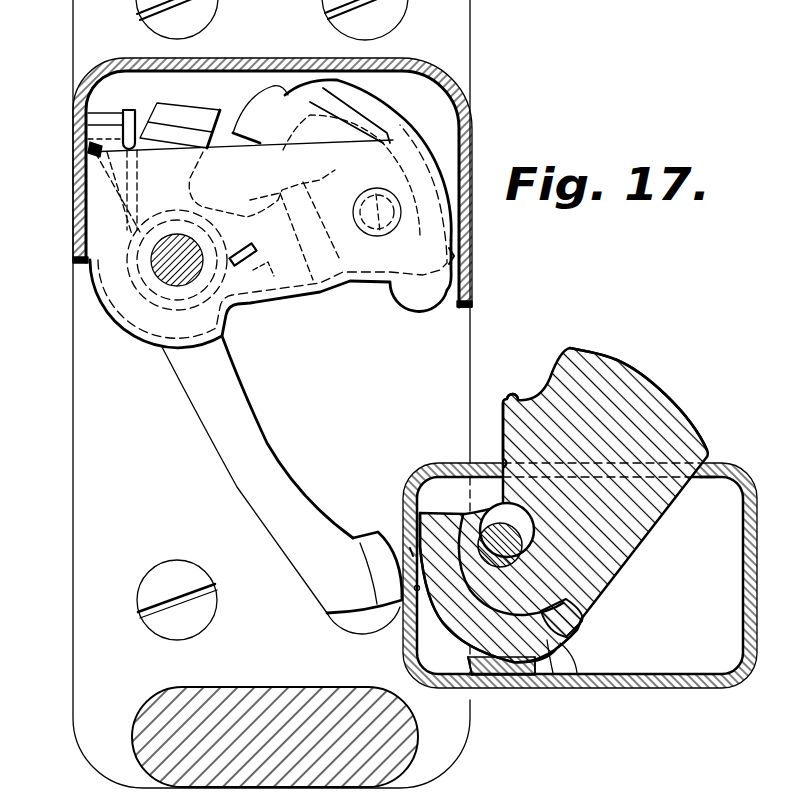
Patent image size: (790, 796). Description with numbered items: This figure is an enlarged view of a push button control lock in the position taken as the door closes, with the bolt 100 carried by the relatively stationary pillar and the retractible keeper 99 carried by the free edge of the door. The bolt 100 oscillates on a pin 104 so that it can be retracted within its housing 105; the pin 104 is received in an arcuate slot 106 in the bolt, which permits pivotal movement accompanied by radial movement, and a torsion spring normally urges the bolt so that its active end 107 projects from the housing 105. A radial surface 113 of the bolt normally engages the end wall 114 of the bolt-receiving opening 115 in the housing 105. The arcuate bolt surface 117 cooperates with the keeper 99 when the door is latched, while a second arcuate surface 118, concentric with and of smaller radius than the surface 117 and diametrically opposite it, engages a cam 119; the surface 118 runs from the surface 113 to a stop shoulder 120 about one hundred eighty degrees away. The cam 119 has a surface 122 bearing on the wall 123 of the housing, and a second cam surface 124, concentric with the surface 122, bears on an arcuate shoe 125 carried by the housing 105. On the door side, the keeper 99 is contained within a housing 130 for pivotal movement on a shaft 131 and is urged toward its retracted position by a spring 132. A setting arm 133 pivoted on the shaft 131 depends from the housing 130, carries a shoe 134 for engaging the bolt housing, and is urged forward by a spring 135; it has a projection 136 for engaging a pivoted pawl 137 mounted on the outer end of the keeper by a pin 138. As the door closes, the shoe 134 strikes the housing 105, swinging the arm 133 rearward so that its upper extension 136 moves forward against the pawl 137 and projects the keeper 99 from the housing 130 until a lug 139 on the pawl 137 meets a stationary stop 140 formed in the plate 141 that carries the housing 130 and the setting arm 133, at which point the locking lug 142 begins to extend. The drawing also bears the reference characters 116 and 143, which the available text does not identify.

The keeper 99 is at (458, 257).
The bolt 100 is at (675, 403).
The pin 104 is at (525, 560).
The housing 105 is at (416, 466).
The arcuate slot 106 is at (530, 536).
The active end 107 is at (625, 392).
The radial surface 113 is at (502, 416).
The end wall 114 is at (502, 462).
The bolt-receiving opening 115 is at (706, 478).
The notch 116 is at (516, 398).
The arcuate bolt surface 117 is at (618, 361).
The second arcuate surface 118 is at (573, 641).
The cam 119 is at (547, 675).
The stop shoulder 120 is at (580, 622).
The cam surface 122 is at (413, 552).
The wall 123 is at (414, 588).
The second cam surface 124 is at (570, 650).
The arcuate shoe 125 is at (480, 672).
The housing 130 is at (472, 117).
The shaft 131 is at (153, 263).
The spring 132 is at (90, 194).
The setting arm 133 is at (233, 483).
The shoe 134 is at (366, 545).
The spring 135 is at (88, 113).
The projection 136 is at (203, 108).
The pawl 137 is at (284, 100).
The pin 138 is at (374, 214).
The lug 139 is at (304, 197).
The stop 140 is at (253, 290).
The plate 141 is at (95, 394).
The locking lug 142 is at (364, 118).
The cam surface 143 is at (372, 96).